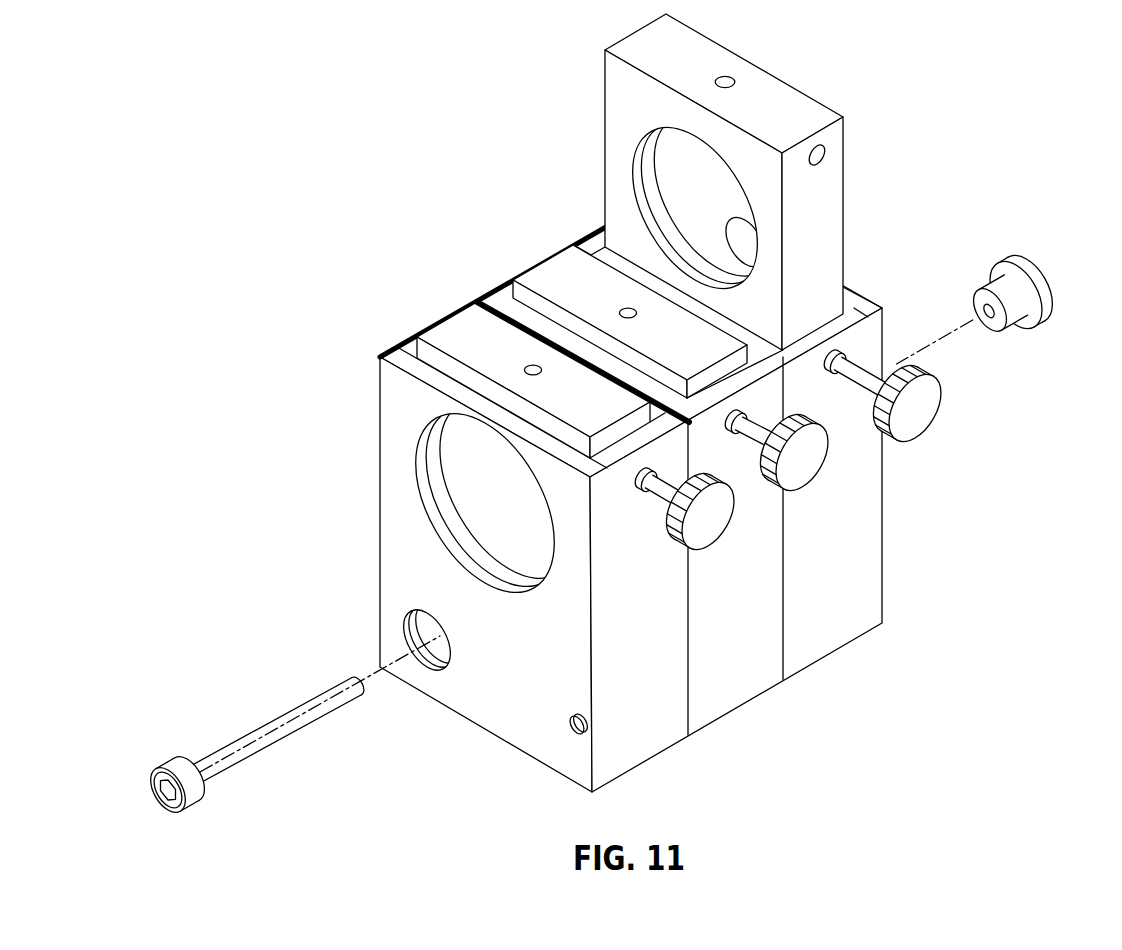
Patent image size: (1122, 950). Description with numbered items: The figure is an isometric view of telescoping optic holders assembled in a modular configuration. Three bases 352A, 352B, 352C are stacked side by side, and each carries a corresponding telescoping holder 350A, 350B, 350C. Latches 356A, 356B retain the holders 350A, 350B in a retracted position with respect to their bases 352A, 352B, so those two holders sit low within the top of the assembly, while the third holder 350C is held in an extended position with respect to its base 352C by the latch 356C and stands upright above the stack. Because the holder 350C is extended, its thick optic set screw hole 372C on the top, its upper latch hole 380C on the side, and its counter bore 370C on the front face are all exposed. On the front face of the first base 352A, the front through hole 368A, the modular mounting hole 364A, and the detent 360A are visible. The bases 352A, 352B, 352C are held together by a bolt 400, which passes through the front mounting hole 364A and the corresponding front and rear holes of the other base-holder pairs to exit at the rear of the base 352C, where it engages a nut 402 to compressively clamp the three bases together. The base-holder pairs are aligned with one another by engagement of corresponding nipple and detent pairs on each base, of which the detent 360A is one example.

The holder 350A is at (438, 325).
The holder 350B is at (552, 277).
The holder 350C is at (720, 182).
The base 352A is at (383, 352).
The base 352B is at (493, 292).
The base 352C is at (587, 233).
The latch 356A is at (715, 520).
The latch 356B is at (808, 460).
The latch 356C is at (920, 410).
The detent 360A is at (587, 732).
The modular mounting hole 364A is at (412, 622).
The front through hole 368A is at (428, 498).
The counter bore 370C is at (745, 267).
The thick optic set screw hole 372C is at (735, 78).
The upper latch hole 380C is at (828, 153).
The bolt 400 is at (252, 728).
The nut 402 is at (1022, 262).